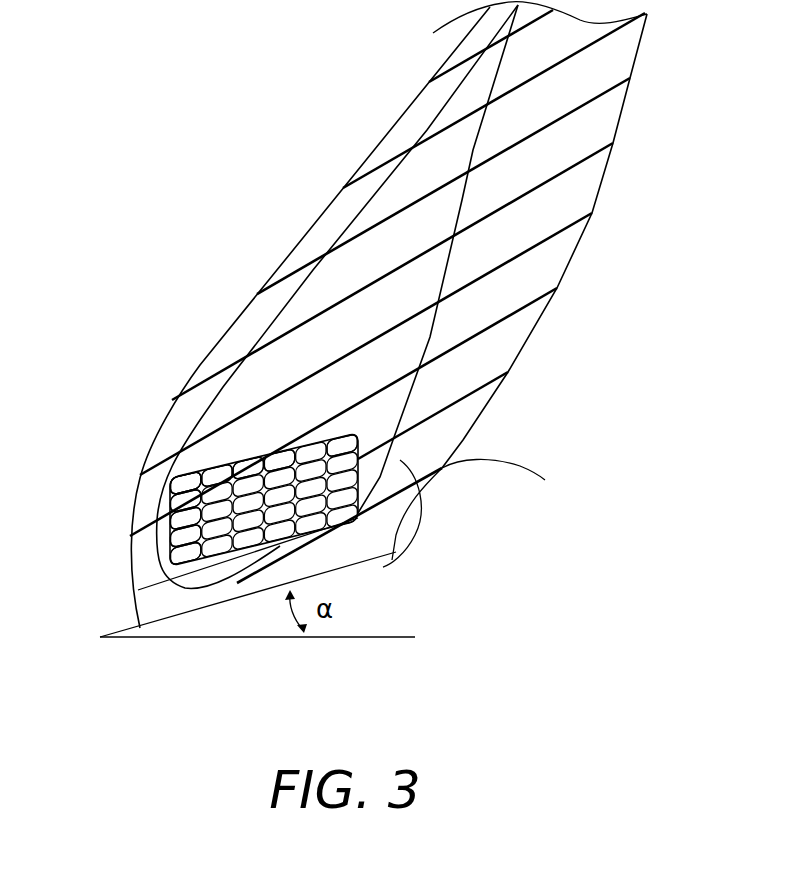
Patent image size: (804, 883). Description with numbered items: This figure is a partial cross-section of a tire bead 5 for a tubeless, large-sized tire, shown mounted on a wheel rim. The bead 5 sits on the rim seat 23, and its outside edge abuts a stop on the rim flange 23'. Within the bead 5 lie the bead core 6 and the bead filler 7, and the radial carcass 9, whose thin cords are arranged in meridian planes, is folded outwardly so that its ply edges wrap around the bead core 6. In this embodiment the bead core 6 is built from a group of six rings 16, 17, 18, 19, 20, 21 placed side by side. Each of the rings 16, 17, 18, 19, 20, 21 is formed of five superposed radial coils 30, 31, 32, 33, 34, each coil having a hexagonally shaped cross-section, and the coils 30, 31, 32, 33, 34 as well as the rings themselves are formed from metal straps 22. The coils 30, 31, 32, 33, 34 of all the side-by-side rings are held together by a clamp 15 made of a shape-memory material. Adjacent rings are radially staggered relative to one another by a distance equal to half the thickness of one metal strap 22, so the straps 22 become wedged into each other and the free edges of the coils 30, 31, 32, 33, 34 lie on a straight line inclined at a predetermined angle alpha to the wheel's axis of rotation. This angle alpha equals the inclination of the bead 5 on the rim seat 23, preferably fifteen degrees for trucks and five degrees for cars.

The bead 5 is at (298, 228).
The bead core 6 is at (333, 428).
The bead filler 7 is at (430, 290).
The radial carcass 9 is at (355, 222).
The clamp 15 is at (247, 553).
The ring 16 is at (180, 480).
The ring 17 is at (226, 477).
The ring 18 is at (254, 470).
The ring 19 is at (285, 460).
The ring 20 is at (350, 437).
The ring 21 is at (415, 470).
The metal strap 22 is at (380, 530).
The rim seat 23 is at (229, 577).
The flange 23' is at (516, 436).
The radial coil 30 is at (173, 560).
The radial coil 31 is at (173, 538).
The radial coil 32 is at (173, 515).
The radial coil 33 is at (173, 488).
The radial coil 34 is at (180, 480).